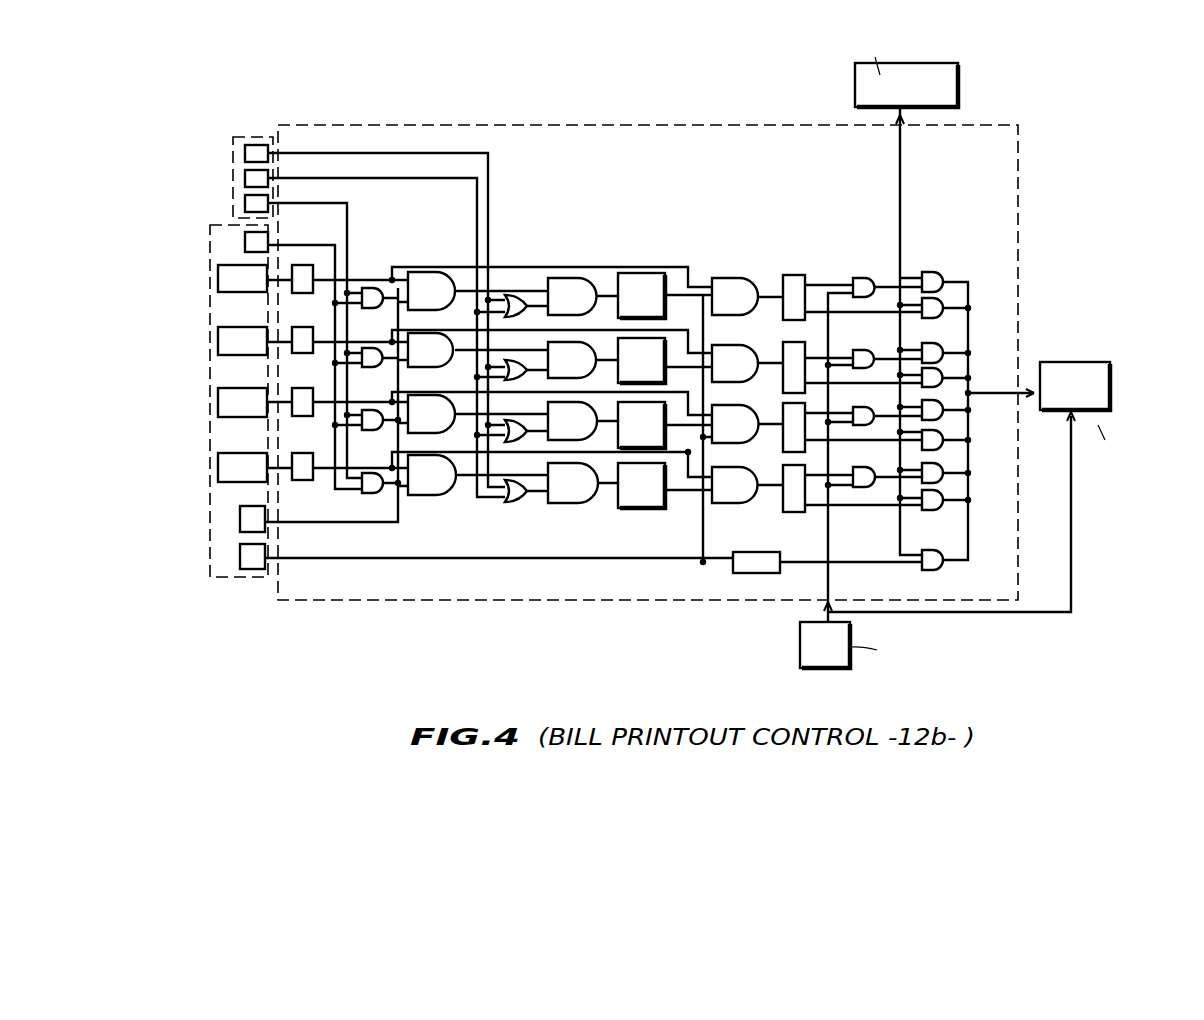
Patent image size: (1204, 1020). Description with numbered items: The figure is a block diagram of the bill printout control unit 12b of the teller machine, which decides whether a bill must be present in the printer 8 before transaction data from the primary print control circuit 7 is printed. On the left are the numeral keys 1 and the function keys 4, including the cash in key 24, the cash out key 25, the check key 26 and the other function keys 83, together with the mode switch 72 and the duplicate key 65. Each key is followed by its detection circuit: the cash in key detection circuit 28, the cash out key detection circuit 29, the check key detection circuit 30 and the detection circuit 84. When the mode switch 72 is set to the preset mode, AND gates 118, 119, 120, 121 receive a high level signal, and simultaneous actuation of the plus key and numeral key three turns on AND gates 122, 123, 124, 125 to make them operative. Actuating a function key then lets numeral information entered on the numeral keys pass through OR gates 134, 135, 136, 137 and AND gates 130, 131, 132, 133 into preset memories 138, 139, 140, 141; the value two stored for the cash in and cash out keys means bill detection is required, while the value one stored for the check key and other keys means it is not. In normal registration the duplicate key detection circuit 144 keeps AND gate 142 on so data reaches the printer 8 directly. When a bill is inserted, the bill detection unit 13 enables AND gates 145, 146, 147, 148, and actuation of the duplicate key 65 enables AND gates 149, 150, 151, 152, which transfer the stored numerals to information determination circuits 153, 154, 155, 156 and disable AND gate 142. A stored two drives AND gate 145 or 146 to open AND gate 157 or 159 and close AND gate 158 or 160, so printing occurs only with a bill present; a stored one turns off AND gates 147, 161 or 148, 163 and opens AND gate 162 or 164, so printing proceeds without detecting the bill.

The numeral keys 1 is at (240, 140).
The function keys 4 is at (215, 567).
The primary print control circuit 7 is at (962, 88).
The printer 8 is at (1070, 366).
The bill printout control unit 12b is at (626, 120).
The bill detection unit 13 is at (800, 643).
The cash in key 24 is at (222, 284).
The cash out key 25 is at (222, 343).
The check key 26 is at (222, 405).
The cash in key detection circuit 28 is at (305, 268).
The cash out key detection circuit 29 is at (307, 336).
The check key detection circuit 30 is at (307, 396).
The duplicate key 65 is at (248, 568).
The mode switch 72 is at (240, 520).
The other function keys 83 is at (222, 467).
The detection circuit 84 is at (305, 460).
The AND gate 118 is at (427, 284).
The AND gate 119 is at (432, 346).
The AND gate 120 is at (432, 407).
The AND gate 121 is at (432, 469).
The AND gate 122 is at (369, 290).
The AND gate 123 is at (367, 350).
The AND gate 124 is at (367, 412).
The AND gate 125 is at (367, 475).
The AND gate 130 is at (570, 285).
The AND gate 131 is at (598, 357).
The AND gate 132 is at (586, 426).
The AND gate 133 is at (566, 495).
The OR gate 134 is at (513, 301).
The OR gate 135 is at (513, 367).
The OR gate 136 is at (513, 428).
The OR gate 137 is at (513, 489).
The preset memory 138 is at (640, 276).
The preset memory 139 is at (653, 350).
The preset memory 140 is at (653, 414).
The preset memory 141 is at (653, 507).
The AND gate 142 is at (935, 544).
The duplicate key detection circuit 144 is at (755, 556).
The AND gate 145 is at (866, 280).
The AND gate 146 is at (858, 353).
The AND gate 147 is at (862, 413).
The AND gate 148 is at (862, 474).
The AND gate 149 is at (735, 276).
The AND gate 150 is at (730, 356).
The AND gate 151 is at (730, 417).
The AND gate 152 is at (731, 479).
The information determination circuit 153 is at (795, 282).
The information determination circuit 154 is at (800, 352).
The information determination circuit 155 is at (800, 432).
The information determination circuit 156 is at (790, 500).
The AND gate 157 is at (940, 272).
The AND gate 158 is at (936, 312).
The AND gate 159 is at (942, 345).
The AND gate 160 is at (940, 374).
The AND gate 161 is at (940, 392).
The AND gate 162 is at (944, 442).
The AND gate 163 is at (940, 455).
The AND gate 164 is at (944, 505).